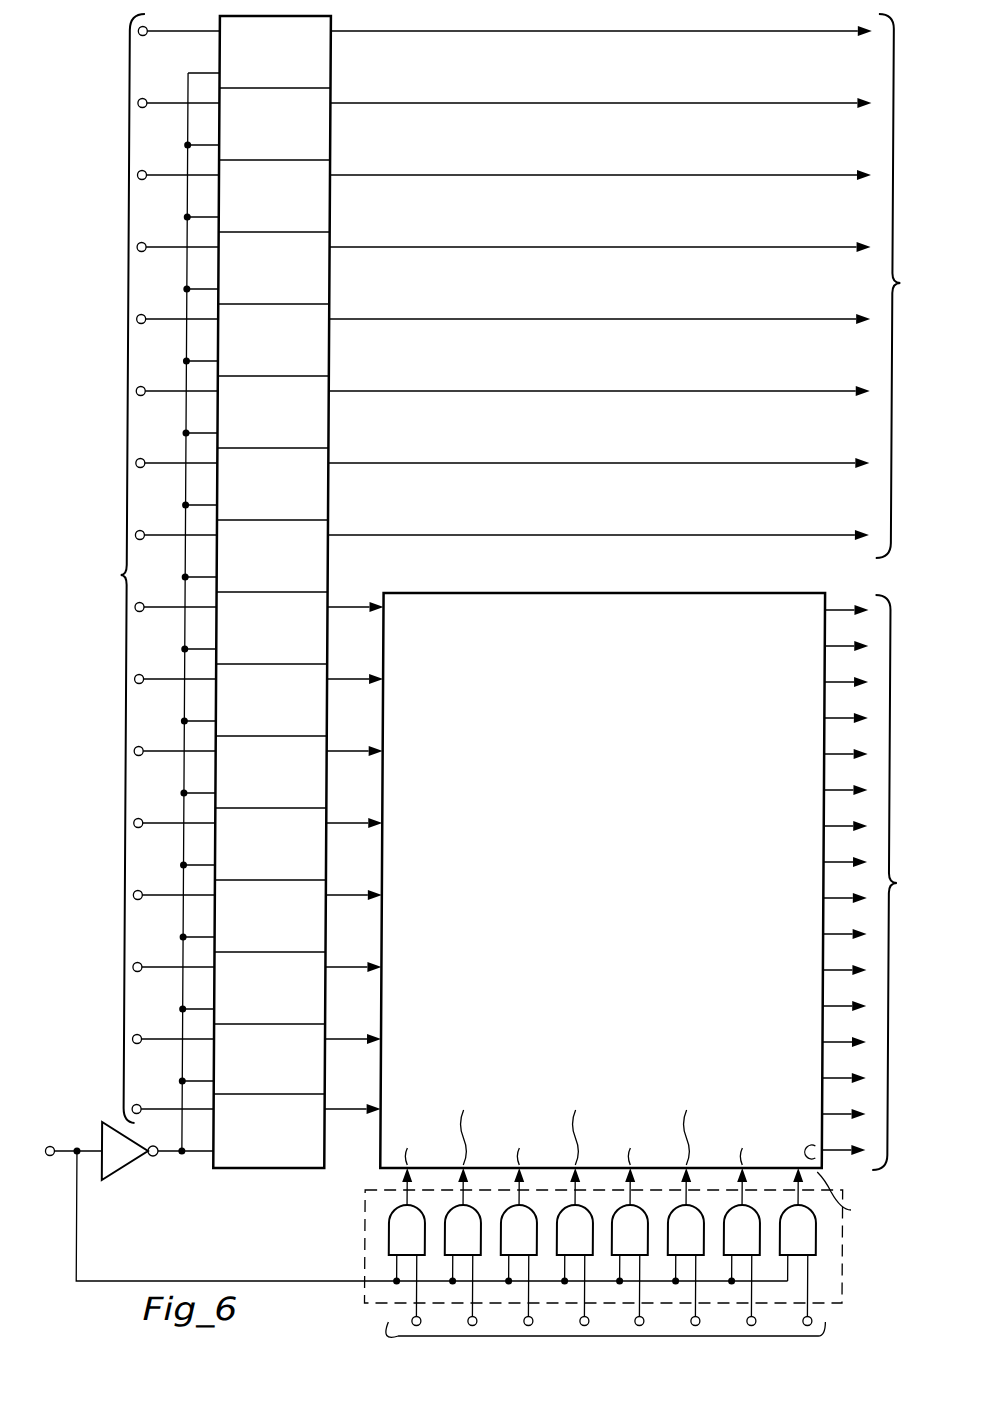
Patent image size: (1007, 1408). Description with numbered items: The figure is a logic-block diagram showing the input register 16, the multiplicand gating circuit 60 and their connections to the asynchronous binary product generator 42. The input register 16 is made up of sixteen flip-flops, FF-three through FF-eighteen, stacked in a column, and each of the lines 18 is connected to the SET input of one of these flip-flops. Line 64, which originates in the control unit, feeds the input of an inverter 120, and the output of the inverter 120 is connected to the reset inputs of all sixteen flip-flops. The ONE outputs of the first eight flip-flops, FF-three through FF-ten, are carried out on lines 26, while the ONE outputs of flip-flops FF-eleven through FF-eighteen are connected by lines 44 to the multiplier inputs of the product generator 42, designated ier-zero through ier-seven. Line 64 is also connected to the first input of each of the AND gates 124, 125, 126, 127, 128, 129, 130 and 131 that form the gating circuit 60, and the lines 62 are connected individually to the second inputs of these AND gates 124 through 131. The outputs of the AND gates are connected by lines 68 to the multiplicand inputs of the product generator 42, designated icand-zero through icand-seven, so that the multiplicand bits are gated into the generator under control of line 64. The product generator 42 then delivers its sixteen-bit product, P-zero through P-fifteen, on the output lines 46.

The input register 16 is at (285, 1199).
The lines 18 is at (154, 568).
The lines 26 is at (630, 286).
The product generator 42 is at (599, 882).
The lines 44 is at (360, 1118).
The lines 46 is at (875, 882).
The gating circuit 60 is at (372, 1230).
The lines 62 is at (588, 1334).
The line 64 is at (63, 1145).
The lines 68 is at (390, 1178).
The inverter 120 is at (113, 1182).
The AND gate 124 is at (403, 1247).
The AND gate 125 is at (459, 1247).
The AND gate 126 is at (515, 1247).
The AND gate 127 is at (571, 1247).
The AND gate 128 is at (626, 1247).
The AND gate 129 is at (682, 1247).
The AND gate 130 is at (738, 1247).
The AND gate 131 is at (794, 1247).